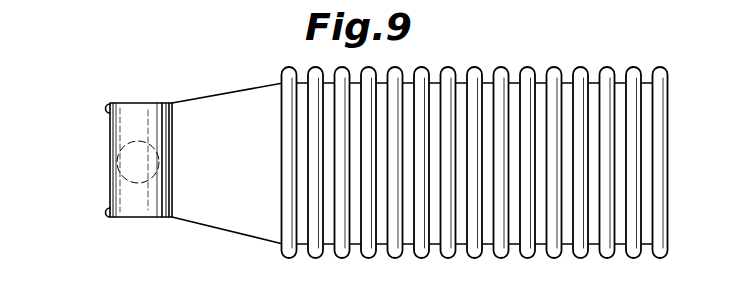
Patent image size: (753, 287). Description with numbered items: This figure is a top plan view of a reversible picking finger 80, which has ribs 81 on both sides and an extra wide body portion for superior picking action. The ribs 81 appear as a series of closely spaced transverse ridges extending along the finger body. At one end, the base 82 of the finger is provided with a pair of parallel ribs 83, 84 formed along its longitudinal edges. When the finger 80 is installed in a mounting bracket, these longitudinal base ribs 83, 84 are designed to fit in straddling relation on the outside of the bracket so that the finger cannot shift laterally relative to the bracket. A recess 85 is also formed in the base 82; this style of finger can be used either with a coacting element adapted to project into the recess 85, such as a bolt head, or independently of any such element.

The reversible picking finger 80 is at (420, 129).
The ribs 81 is at (472, 68).
The base 82 is at (163, 103).
The longitudinal base rib 83 is at (105, 108).
The longitudinal base rib 84 is at (105, 212).
The recess 85 is at (112, 162).